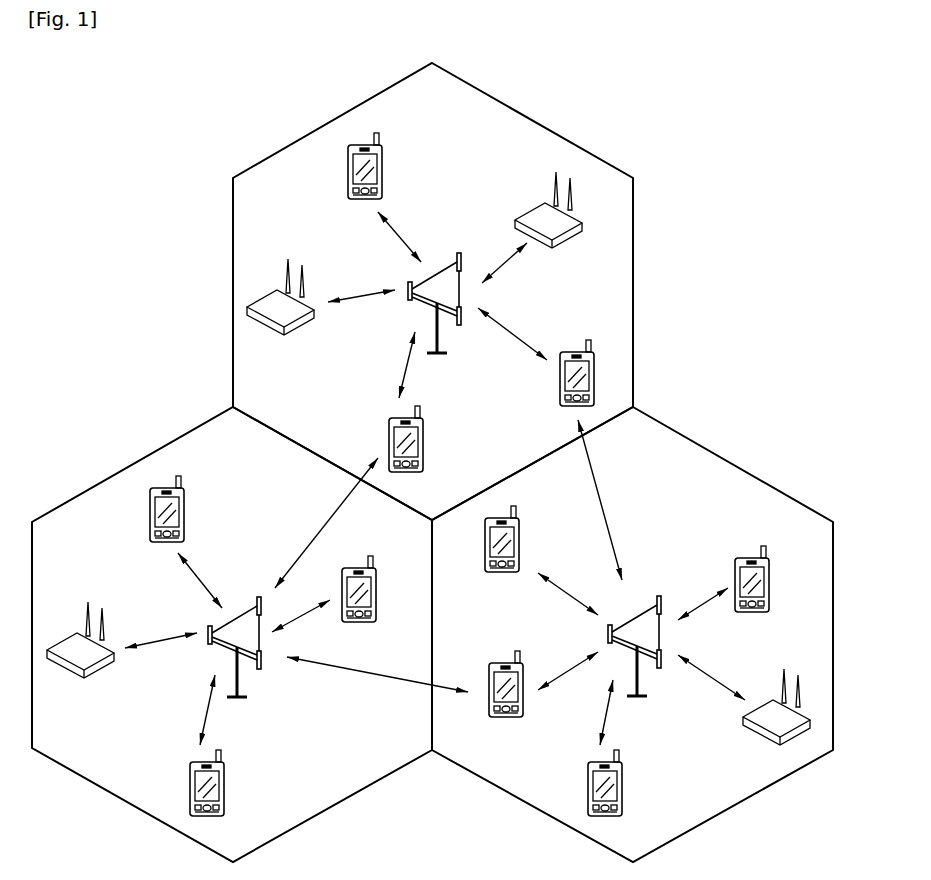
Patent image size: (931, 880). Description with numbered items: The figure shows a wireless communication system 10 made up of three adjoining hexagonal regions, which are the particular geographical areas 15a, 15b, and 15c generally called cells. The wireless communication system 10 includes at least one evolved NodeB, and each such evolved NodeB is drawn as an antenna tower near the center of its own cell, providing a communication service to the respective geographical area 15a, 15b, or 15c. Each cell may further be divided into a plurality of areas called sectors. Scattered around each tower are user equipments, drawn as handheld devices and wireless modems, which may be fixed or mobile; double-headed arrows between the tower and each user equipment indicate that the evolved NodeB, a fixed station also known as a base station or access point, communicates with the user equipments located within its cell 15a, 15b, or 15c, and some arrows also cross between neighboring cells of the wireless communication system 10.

The wireless communication system 10 is at (715, 183).
The geographical area 15a is at (633, 278).
The geographical area 15b is at (757, 477).
The geographical area 15c is at (108, 478).